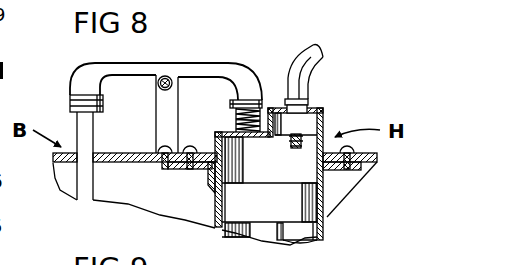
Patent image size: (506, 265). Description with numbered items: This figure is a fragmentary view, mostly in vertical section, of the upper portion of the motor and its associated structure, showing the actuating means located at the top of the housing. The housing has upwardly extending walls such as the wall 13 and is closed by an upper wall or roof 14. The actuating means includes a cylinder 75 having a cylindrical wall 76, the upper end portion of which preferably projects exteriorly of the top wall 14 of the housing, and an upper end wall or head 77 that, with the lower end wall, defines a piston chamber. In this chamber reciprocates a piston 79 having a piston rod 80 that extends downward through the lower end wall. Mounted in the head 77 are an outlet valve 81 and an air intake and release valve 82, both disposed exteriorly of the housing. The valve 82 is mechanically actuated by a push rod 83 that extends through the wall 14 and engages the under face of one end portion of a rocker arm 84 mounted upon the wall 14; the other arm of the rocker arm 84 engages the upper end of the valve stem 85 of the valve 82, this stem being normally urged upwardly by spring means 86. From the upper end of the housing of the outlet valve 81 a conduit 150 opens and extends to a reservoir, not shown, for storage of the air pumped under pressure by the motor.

The upwardly extending wall 13 is at (68, 177).
The upper wall or roof 14 is at (53, 153).
The cylinder 75 is at (329, 218).
The cylindrical wall 76 is at (317, 237).
The upper end wall or head 77 is at (270, 137).
The piston 79 is at (293, 201).
The piston rod 80 is at (268, 237).
The outlet valve 81 is at (306, 127).
The air intake and release valve 82 is at (223, 118).
The push rod 83 is at (85, 192).
The rocker arm 84 is at (187, 64).
The valve stem 85 is at (261, 98).
The spring means 86 is at (240, 126).
The conduit 150 is at (318, 54).